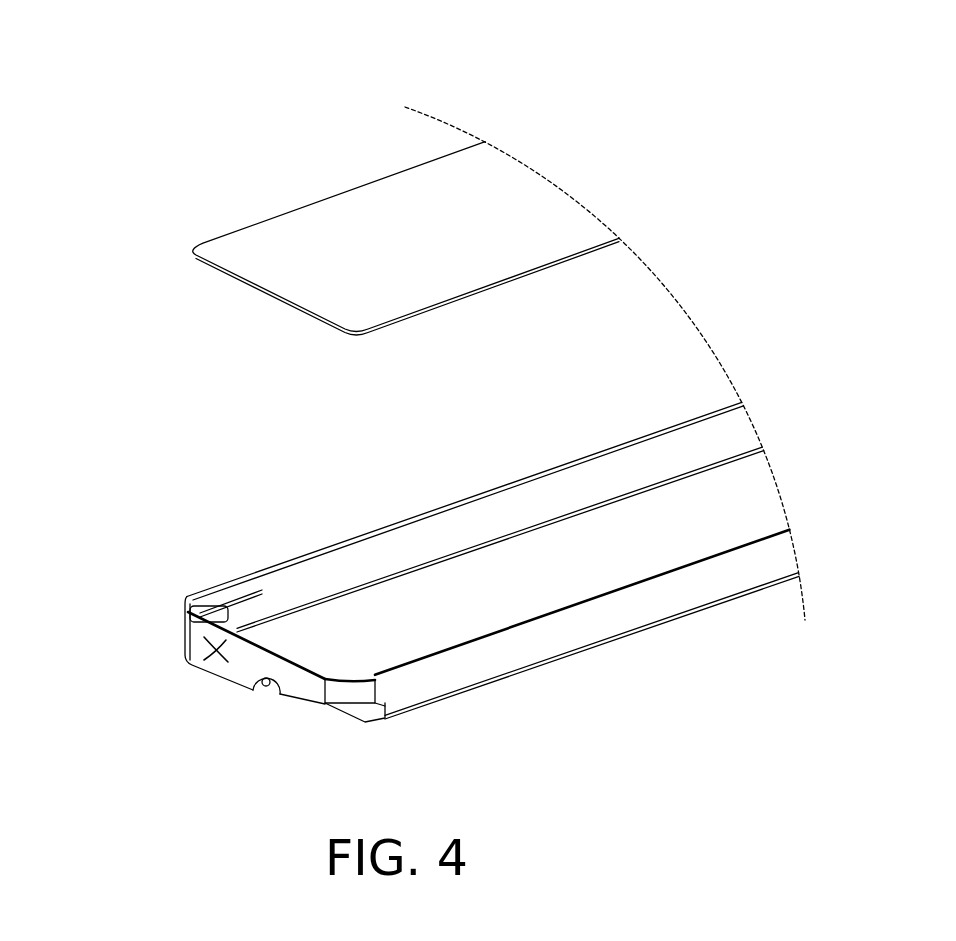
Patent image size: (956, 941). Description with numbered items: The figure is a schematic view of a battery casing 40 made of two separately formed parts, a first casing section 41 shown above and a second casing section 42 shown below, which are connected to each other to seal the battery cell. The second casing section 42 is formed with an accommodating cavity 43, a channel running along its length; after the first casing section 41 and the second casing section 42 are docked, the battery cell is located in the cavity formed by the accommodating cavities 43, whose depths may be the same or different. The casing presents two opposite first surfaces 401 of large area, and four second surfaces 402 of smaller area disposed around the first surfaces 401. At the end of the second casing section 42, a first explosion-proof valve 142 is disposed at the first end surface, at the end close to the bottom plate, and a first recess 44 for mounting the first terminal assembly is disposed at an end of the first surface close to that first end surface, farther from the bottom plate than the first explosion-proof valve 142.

The casing 40 is at (248, 118).
The first casing section 41 is at (335, 260).
The first surface 401 is at (420, 210).
The second casing section 42 is at (575, 637).
The accommodating cavity 43 is at (670, 537).
The second surface 402 is at (242, 665).
The first recess 44 is at (325, 703).
The first explosion-proof valve 142 is at (212, 665).